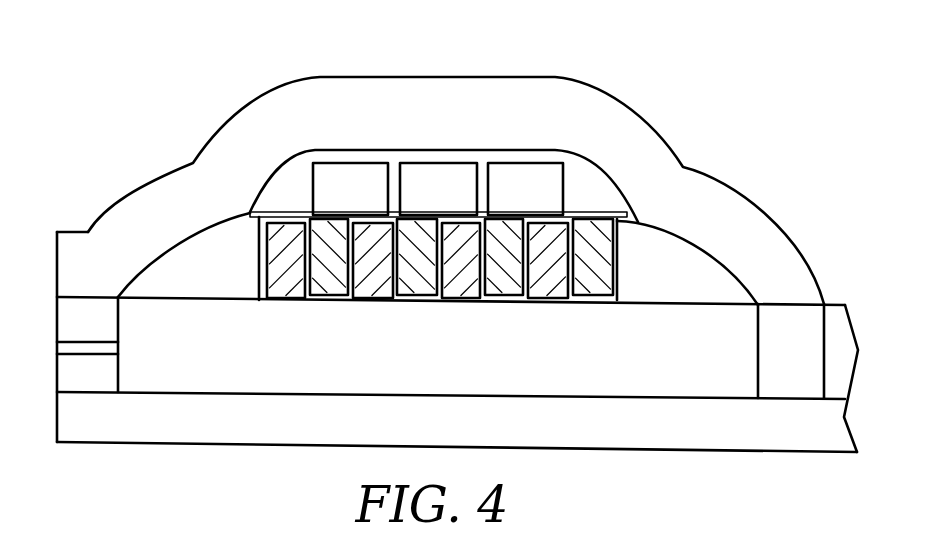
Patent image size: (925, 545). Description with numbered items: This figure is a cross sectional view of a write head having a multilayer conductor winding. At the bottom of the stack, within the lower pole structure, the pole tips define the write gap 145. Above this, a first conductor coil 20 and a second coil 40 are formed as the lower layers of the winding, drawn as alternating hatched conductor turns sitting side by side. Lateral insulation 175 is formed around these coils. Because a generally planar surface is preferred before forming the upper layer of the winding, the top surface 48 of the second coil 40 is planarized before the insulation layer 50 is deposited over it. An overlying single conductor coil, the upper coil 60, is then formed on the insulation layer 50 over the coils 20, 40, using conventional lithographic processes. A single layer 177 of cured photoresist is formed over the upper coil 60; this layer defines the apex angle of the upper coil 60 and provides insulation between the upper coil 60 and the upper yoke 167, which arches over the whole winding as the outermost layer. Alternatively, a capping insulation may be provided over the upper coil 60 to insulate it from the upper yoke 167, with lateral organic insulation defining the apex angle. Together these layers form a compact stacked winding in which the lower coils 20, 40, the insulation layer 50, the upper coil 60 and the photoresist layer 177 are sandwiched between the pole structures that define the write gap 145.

The coil 20 is at (455, 293).
The second coil 40 is at (338, 290).
The top surface of the second coil 48 is at (585, 214).
The insulation layer 50 is at (597, 216).
The upper coil 60 is at (333, 173).
The write gap 145 is at (82, 348).
The upper yoke 167 is at (128, 227).
The lateral insulation 175 is at (185, 267).
The single layer of cured photoresist 177 is at (283, 188).